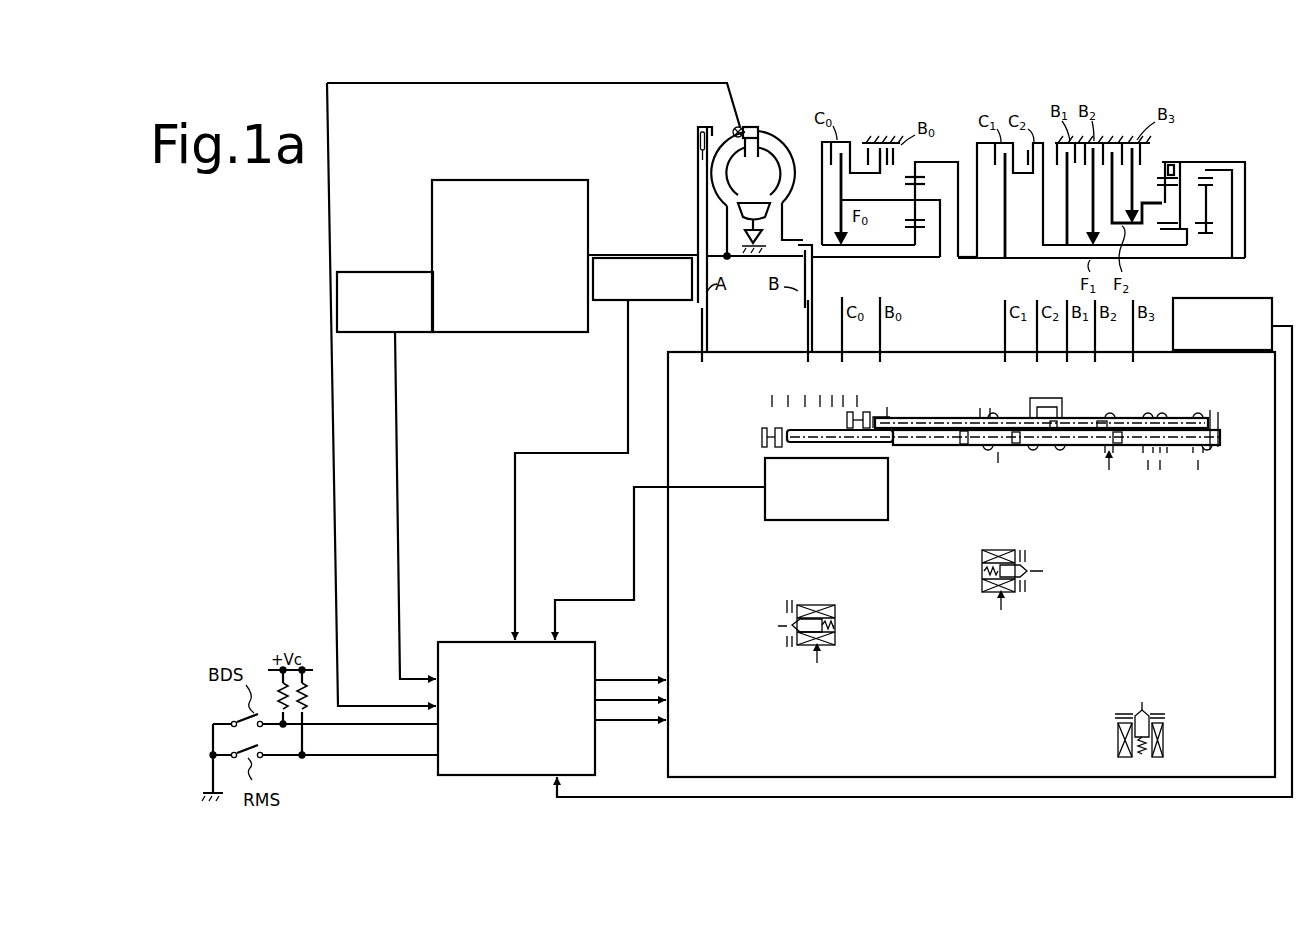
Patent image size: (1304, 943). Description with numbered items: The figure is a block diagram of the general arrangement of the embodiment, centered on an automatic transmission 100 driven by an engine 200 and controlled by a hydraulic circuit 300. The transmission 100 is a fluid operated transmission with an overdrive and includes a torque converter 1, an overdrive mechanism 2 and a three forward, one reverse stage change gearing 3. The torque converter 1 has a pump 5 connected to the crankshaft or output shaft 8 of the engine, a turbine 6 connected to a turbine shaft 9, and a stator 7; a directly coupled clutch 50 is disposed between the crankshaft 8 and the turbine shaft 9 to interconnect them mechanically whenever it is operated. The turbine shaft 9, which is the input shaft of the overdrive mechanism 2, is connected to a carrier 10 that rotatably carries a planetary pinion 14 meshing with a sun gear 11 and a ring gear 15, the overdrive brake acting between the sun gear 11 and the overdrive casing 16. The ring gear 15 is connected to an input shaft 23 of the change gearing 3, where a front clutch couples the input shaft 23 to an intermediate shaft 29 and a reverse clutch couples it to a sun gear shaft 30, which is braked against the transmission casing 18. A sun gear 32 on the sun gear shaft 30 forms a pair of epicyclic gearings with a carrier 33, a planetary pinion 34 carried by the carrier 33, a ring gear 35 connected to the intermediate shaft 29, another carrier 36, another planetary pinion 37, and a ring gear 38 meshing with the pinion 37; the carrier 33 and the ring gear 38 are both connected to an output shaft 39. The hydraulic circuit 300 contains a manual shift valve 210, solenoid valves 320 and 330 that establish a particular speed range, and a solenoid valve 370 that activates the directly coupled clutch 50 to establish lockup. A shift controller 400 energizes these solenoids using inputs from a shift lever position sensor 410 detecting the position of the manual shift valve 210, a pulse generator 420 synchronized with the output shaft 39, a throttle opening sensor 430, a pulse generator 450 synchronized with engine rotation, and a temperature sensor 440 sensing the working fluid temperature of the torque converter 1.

The torque converter 1 is at (742, 116).
The overdrive mechanism 2 is at (892, 121).
The change gearing 3 is at (1128, 127).
The pump 5 is at (780, 148).
The turbine 6 is at (736, 147).
The stator 7 is at (769, 224).
The output shaft of engine 8 is at (642, 258).
The turbine shaft 9 is at (924, 258).
The carrier 10 is at (934, 200).
The sun gear 11 is at (906, 224).
The planetary pinion 14 is at (904, 185).
The ring gear 15 is at (916, 176).
The overdrive casing 16 is at (880, 140).
The transmission casing 18 is at (1117, 141).
The input shaft 23 is at (968, 258).
The intermediate shaft 29 is at (1050, 258).
The sun gear shaft 30 is at (1059, 242).
The sun gear 32 is at (1190, 242).
The carrier 33 is at (1208, 161).
The planetary pinion 34 is at (1218, 192).
The ring gear 35 is at (1216, 182).
The carrier 36 is at (1147, 186).
The planetary pinion 37 is at (1162, 216).
The ring gear 38 is at (1174, 162).
The output shaft 39 is at (1257, 260).
The directly coupled clutch 50 is at (698, 130).
The automatic transmission 100 is at (976, 104).
The engine 200 is at (531, 180).
The manual shift valve 210 is at (1223, 443).
The hydraulic circuit 300 is at (667, 770).
The solenoid valve 320 is at (1024, 636).
The solenoid valve 330 is at (1223, 750).
The solenoid valve 370 is at (836, 692).
The shift controller 400 is at (597, 645).
The shift lever position sensor 410 is at (815, 521).
The pulse generator 420 is at (1235, 298).
The throttle opening sensor 430 is at (372, 333).
The temperature sensor 440 is at (754, 127).
The pulse generator 450 is at (636, 301).